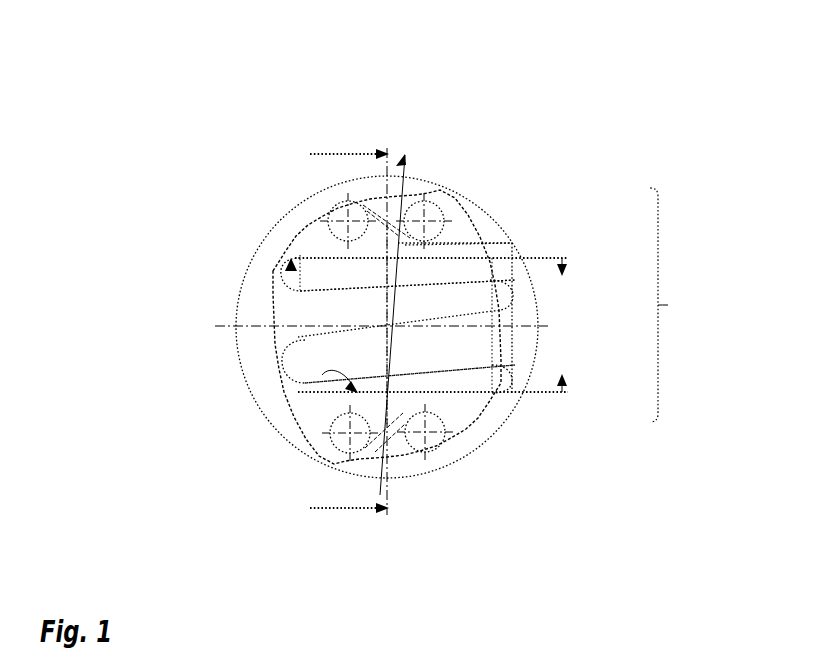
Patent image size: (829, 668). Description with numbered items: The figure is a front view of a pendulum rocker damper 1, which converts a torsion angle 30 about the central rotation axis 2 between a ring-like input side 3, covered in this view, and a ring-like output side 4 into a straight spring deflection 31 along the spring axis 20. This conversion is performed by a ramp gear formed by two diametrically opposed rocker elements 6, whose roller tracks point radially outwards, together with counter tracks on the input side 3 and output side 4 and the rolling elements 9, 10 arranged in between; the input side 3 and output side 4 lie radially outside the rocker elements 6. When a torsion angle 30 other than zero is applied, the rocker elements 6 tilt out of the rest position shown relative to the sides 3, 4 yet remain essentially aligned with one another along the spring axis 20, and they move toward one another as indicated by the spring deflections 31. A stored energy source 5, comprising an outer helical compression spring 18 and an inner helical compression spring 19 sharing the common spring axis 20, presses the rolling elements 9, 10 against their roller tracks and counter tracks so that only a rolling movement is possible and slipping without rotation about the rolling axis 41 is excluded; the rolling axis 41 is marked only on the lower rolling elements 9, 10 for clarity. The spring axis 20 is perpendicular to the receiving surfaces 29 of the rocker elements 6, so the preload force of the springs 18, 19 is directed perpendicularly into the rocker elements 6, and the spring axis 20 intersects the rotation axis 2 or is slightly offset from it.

The pendulum rocker damper 1 is at (735, 44).
The central rotation axis 2 is at (392, 342).
The input side 3 is at (273, 271).
The output side 4 is at (298, 213).
The stored energy source 5 is at (669, 305).
The rocker element 6 is at (300, 262).
The rolling element 9 is at (360, 203).
The rolling element 10 is at (443, 213).
The outer helical compression spring 18 is at (468, 355).
The inner helical compression spring 19 is at (428, 262).
The spring axis 20 is at (405, 245).
The receiving surface 29 is at (302, 280).
The torsion angle 30 is at (395, 160).
The spring deflection 31 is at (572, 262).
The rolling axis 41 is at (410, 440).